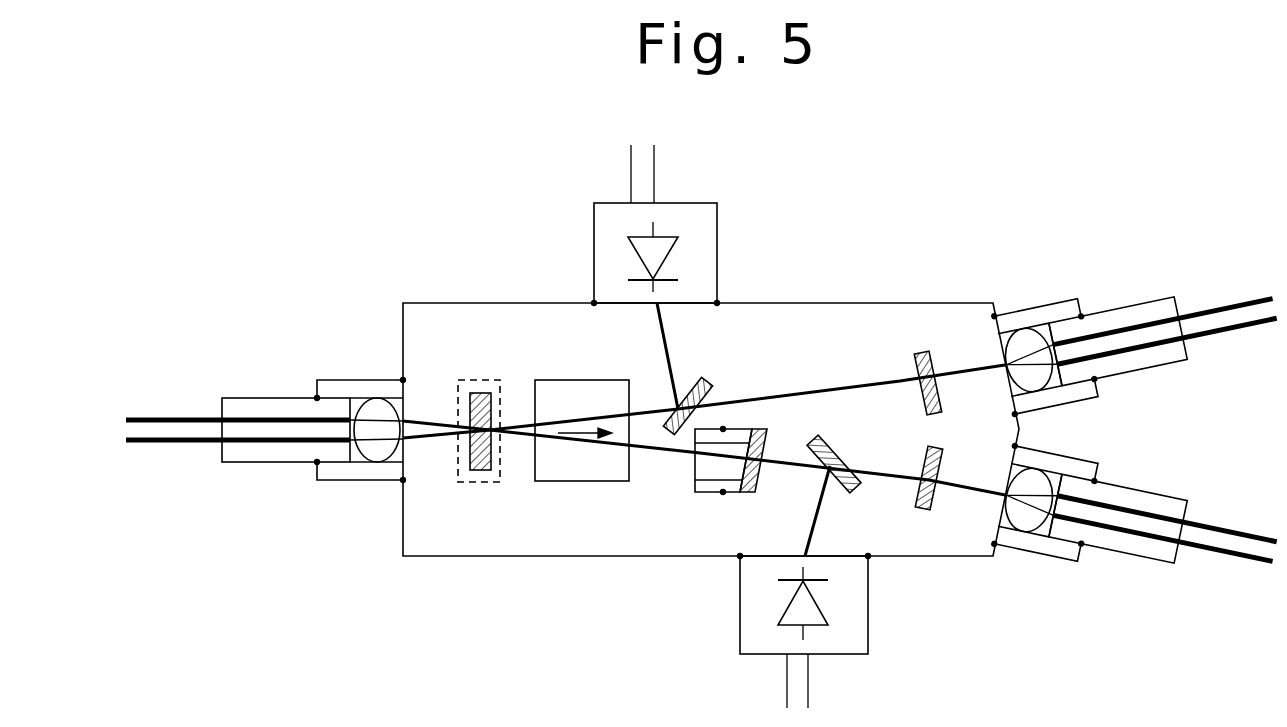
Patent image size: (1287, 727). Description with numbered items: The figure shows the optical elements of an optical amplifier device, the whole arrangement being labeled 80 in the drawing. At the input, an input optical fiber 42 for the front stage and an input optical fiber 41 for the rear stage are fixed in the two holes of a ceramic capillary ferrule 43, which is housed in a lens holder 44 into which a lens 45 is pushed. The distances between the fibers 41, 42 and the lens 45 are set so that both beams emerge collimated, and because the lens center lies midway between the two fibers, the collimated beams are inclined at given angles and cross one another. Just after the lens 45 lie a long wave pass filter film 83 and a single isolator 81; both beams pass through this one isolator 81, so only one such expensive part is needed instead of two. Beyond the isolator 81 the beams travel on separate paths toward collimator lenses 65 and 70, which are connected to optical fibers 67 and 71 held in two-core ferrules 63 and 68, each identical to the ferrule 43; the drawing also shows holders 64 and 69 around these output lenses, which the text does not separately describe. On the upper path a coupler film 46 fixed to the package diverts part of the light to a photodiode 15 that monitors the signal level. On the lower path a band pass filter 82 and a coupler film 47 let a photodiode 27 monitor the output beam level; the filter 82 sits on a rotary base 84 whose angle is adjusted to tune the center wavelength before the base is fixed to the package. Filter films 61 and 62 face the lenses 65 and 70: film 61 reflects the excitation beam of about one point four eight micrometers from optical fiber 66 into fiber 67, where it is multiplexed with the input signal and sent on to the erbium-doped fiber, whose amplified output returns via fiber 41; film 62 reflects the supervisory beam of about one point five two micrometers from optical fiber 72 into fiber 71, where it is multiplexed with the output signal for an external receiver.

The photodiode 15 is at (717, 243).
The photodiode 27 is at (868, 628).
The input optical fiber 41 is at (170, 416).
The input optical fiber 42 is at (168, 446).
The ceramic capillary ferrule 43 is at (272, 397).
The lens holder 44 is at (365, 380).
The lens 45 is at (394, 413).
The coupler film 46 is at (704, 382).
The coupler film 47 is at (846, 458).
The filter film 61 is at (920, 355).
The filter film 62 is at (916, 494).
The two-core ferrule 63 is at (1135, 302).
The holder 64 is at (1053, 303).
The collimator lens 65 is at (1020, 380).
The optical fiber 66 is at (1237, 300).
The optical fiber 67 is at (1236, 325).
The two-core ferrule 68 is at (1143, 560).
The holder 69 is at (1042, 557).
The collimator lens 70 is at (1010, 504).
The optical fiber 71 is at (1236, 535).
The optical fiber 72 is at (1233, 560).
The optical module 80 is at (897, 230).
The isolator 81 is at (593, 380).
The band pass filter 82 is at (763, 432).
The long wave pass filter film 83 is at (493, 380).
The rotary base 84 is at (704, 493).